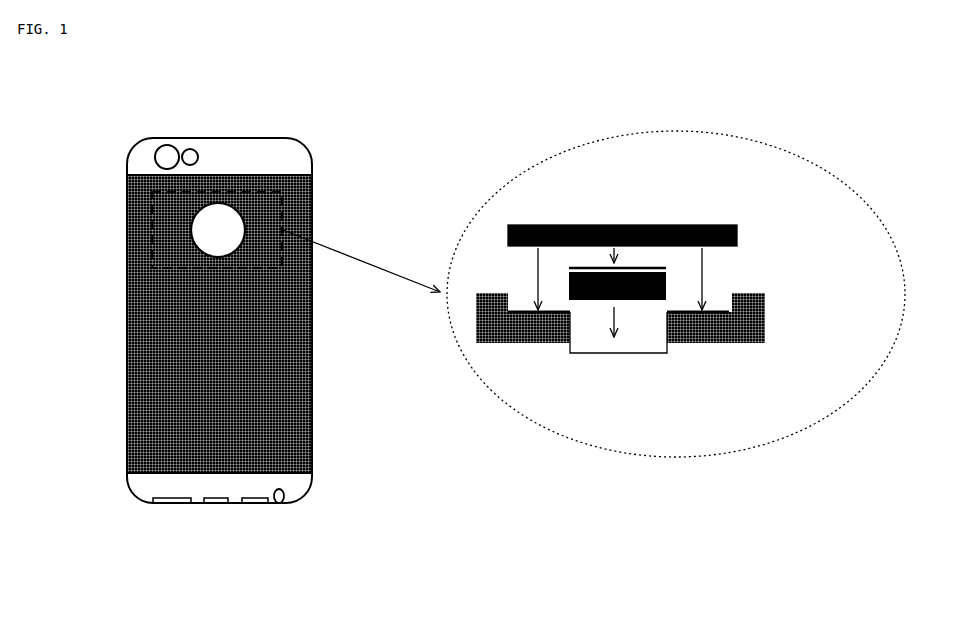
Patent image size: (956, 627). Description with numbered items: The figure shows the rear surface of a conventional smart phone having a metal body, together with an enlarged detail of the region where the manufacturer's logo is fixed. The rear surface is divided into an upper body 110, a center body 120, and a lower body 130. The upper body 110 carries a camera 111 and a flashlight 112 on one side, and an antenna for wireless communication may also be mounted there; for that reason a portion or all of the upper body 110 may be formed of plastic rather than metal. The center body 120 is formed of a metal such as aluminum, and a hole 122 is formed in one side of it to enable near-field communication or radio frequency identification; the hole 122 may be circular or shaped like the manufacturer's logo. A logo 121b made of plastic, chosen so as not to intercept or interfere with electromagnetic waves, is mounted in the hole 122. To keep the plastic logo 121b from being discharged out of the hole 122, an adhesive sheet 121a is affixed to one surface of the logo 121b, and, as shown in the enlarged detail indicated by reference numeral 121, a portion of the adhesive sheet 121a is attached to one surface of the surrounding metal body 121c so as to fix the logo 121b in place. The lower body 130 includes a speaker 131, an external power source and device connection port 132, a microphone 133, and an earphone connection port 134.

The upper body 110 is at (288, 157).
The camera 111 is at (165, 141).
The flashlight 112 is at (191, 144).
The center body 120 is at (295, 428).
The logo fixing arrangement 121 is at (152, 228).
The hole 122 is at (218, 257).
The lower body 130 is at (143, 492).
The speaker 131 is at (175, 507).
The external power source and device connection port 132 is at (222, 507).
The microphone 133 is at (257, 507).
The earphone connection port 134 is at (278, 507).
The adhesive sheet 121a is at (737, 238).
The logo 121b is at (607, 300).
The metal body 121c is at (765, 322).